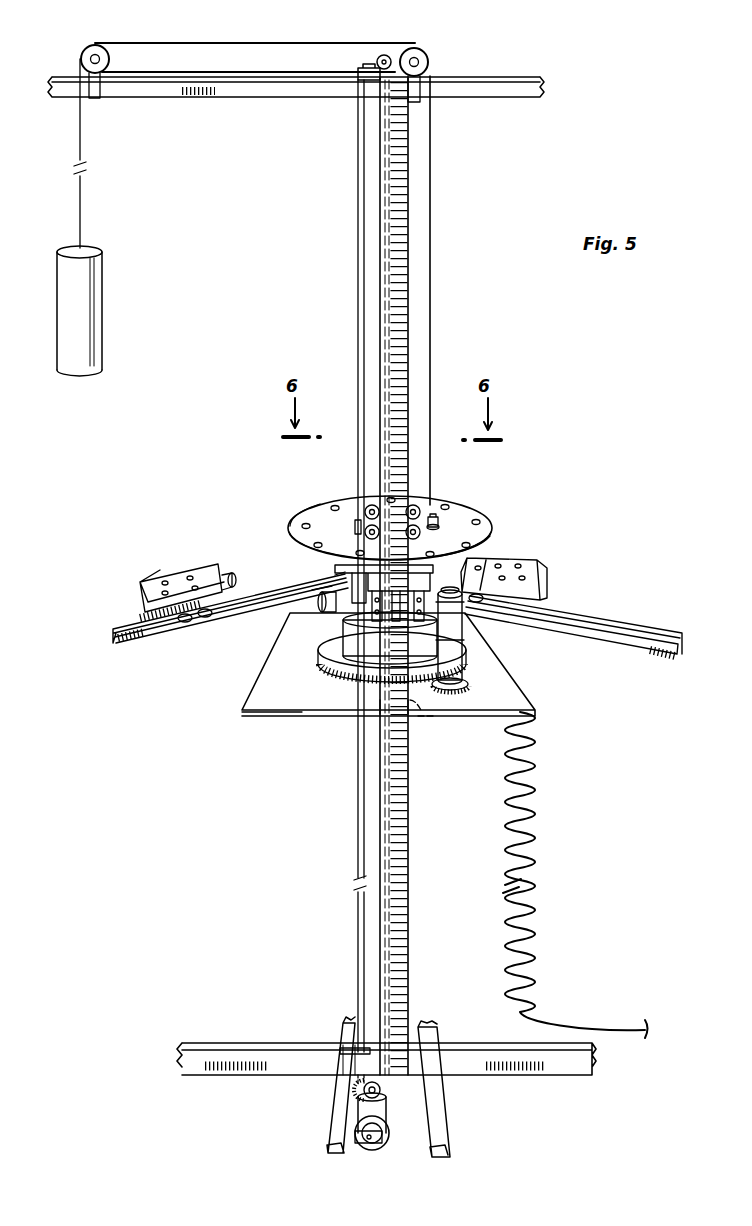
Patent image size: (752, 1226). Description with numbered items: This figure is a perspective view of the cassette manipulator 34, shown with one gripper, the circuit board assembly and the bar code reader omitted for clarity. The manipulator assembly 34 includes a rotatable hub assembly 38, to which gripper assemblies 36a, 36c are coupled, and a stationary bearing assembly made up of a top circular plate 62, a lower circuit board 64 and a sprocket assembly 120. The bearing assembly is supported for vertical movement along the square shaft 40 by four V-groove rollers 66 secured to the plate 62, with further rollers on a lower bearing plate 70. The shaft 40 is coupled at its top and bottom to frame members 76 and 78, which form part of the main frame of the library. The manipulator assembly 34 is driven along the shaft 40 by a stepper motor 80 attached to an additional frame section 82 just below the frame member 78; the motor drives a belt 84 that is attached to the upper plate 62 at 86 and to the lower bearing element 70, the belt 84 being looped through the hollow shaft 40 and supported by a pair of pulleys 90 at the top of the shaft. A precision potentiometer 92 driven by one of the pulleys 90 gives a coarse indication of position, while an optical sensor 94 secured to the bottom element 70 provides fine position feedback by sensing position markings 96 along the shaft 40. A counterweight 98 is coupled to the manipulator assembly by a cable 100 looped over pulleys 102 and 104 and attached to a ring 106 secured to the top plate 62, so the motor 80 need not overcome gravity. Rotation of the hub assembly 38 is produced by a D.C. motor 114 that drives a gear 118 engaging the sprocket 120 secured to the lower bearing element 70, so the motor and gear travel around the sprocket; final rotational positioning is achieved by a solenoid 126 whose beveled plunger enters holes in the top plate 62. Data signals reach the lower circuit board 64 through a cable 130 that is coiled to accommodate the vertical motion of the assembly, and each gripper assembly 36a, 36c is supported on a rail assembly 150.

The cassette manipulator 34 is at (542, 450).
The gripper assembly 36a is at (510, 558).
The gripper assembly 36c is at (198, 565).
The rotatable hub assembly 38 is at (480, 627).
The square shaft 40 is at (408, 202).
The top circular plate 62 is at (324, 496).
The lower circuit board 64 is at (248, 712).
The V-groove rollers 66 is at (466, 540).
The lower bearing plate 70 is at (346, 702).
The frame member 76 is at (207, 99).
The frame member 78 is at (254, 1042).
The stepper motor 80 is at (392, 1112).
The additional frame section 82 is at (362, 1091).
The belt 84 is at (356, 937).
The belt attachment point 86 is at (298, 523).
The pulleys 90 is at (360, 65).
The precision potentiometer 92 is at (376, 58).
The optical sensor 94 is at (429, 728).
The position markings 96 is at (402, 308).
The counterweight 98 is at (102, 302).
The cable 100 is at (232, 43).
The pulley 102 is at (80, 55).
The pulley 104 is at (428, 62).
The ring 106 is at (439, 517).
The D.C. motor 114 is at (466, 651).
The gear 118 is at (455, 684).
The sprocket assembly 120 is at (297, 659).
The solenoid 126 is at (326, 572).
The cable 130 is at (537, 832).
The rail assembly 150 is at (150, 654).